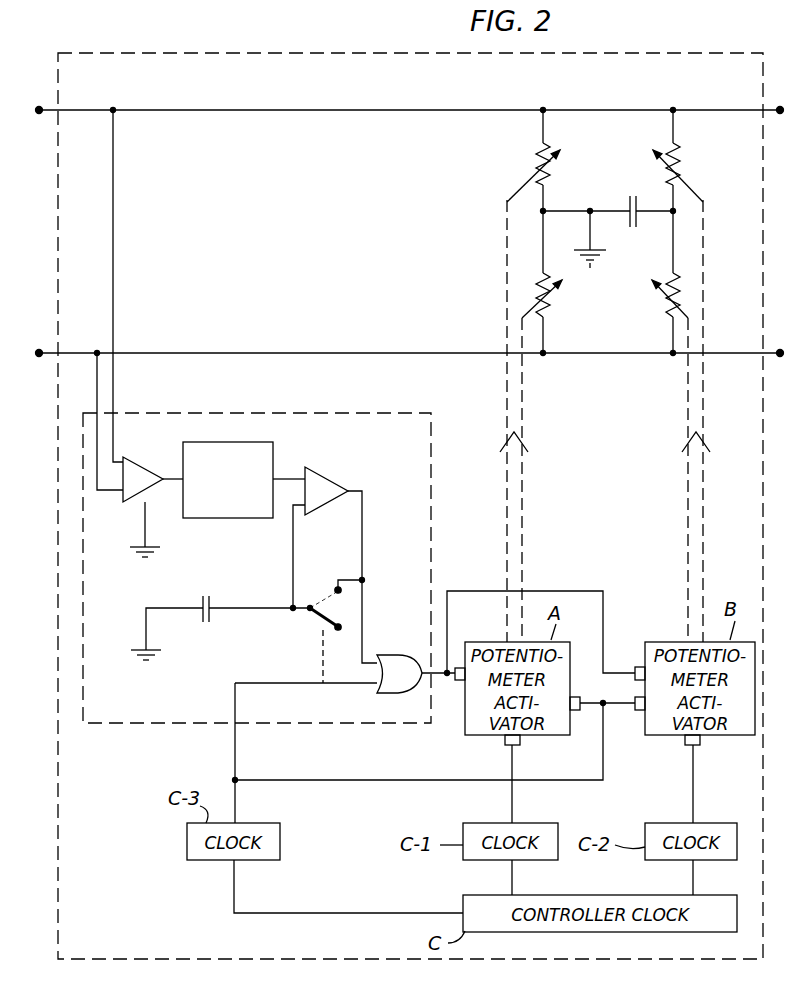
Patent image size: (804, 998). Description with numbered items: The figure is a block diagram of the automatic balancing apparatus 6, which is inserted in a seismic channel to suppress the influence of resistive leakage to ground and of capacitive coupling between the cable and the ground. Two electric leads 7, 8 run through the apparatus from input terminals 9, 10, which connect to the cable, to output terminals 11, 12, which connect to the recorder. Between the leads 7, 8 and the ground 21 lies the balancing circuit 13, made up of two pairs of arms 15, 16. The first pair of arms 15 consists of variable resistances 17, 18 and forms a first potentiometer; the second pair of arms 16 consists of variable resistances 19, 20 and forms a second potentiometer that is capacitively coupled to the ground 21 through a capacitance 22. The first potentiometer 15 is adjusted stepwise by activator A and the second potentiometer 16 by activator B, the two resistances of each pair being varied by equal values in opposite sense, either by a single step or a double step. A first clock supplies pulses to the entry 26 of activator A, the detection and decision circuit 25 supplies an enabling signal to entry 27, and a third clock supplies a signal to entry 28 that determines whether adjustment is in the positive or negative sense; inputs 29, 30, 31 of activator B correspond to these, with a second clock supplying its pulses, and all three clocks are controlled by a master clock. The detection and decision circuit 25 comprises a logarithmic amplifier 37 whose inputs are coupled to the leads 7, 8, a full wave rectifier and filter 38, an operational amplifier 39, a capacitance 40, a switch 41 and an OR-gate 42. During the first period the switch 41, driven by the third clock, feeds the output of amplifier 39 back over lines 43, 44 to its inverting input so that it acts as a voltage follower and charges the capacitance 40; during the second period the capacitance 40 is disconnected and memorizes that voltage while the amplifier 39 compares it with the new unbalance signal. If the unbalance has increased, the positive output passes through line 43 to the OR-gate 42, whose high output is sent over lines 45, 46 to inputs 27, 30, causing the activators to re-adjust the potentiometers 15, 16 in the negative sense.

The automatic balancing apparatus 6 is at (247, 53).
The electric lead 7 is at (88, 108).
The electric lead 8 is at (184, 351).
The input terminal 9 is at (39, 107).
The input terminal 10 is at (39, 351).
The output terminal 11 is at (780, 114).
The output terminal 12 is at (780, 357).
The balancing circuit 13 is at (599, 214).
The first pair of arms (first potentiometer) 15 is at (486, 208).
The second pair of arms (second potentiometer) 16 is at (707, 175).
The variable resistance 17 is at (537, 160).
The variable resistance 18 is at (546, 313).
The variable resistance 19 is at (676, 153).
The variable resistance 20 is at (662, 317).
The ground 21 is at (590, 256).
The capacitance 22 is at (631, 206).
The detection and decision circuit 25 is at (83, 522).
The entry of activator A 26 is at (503, 746).
The entry of activator A 27 is at (457, 688).
The entry of activator A 28 is at (579, 712).
The input of activator B 29 is at (701, 742).
The input of activator B 30 is at (637, 666).
The input of activator B 31 is at (640, 712).
The logarithmic amplifier 37 is at (136, 472).
The full wave rectifier and filter 38 is at (277, 447).
The operational amplifier 39 is at (349, 483).
The capacitance 40 is at (206, 615).
The switch 41 is at (340, 613).
The OR-gate 42 is at (393, 657).
The line 43 is at (368, 513).
The line 44 is at (292, 553).
The line 45 is at (432, 679).
The line 46 is at (576, 591).